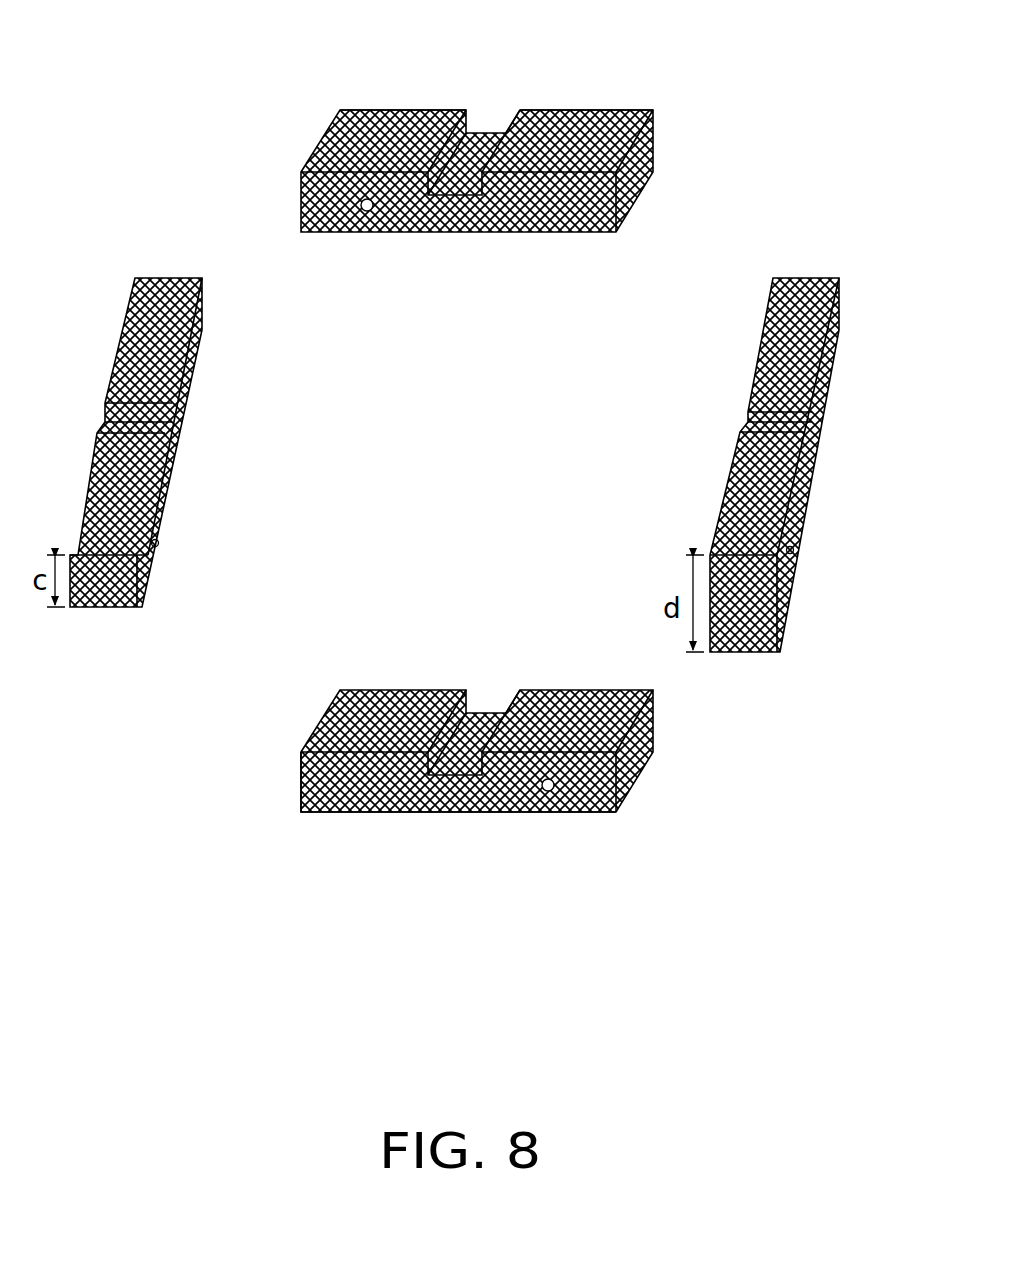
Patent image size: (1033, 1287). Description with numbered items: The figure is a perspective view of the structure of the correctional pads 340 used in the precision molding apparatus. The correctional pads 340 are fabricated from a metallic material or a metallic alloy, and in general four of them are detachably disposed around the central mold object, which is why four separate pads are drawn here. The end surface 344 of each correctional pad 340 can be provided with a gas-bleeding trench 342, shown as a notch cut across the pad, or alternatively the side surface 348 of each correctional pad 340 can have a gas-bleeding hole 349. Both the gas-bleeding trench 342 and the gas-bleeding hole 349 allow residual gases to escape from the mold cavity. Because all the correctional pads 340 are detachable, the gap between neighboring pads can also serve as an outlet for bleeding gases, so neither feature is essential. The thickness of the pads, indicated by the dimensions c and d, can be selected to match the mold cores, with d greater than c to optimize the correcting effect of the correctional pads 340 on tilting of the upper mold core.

The correctional pad 340 is at (504, 488).
The gas-bleeding trench 342 is at (489, 121).
The end surface 344 is at (585, 128).
The side surface 348 is at (458, 856).
The gas-bleeding hole 349 is at (569, 877).